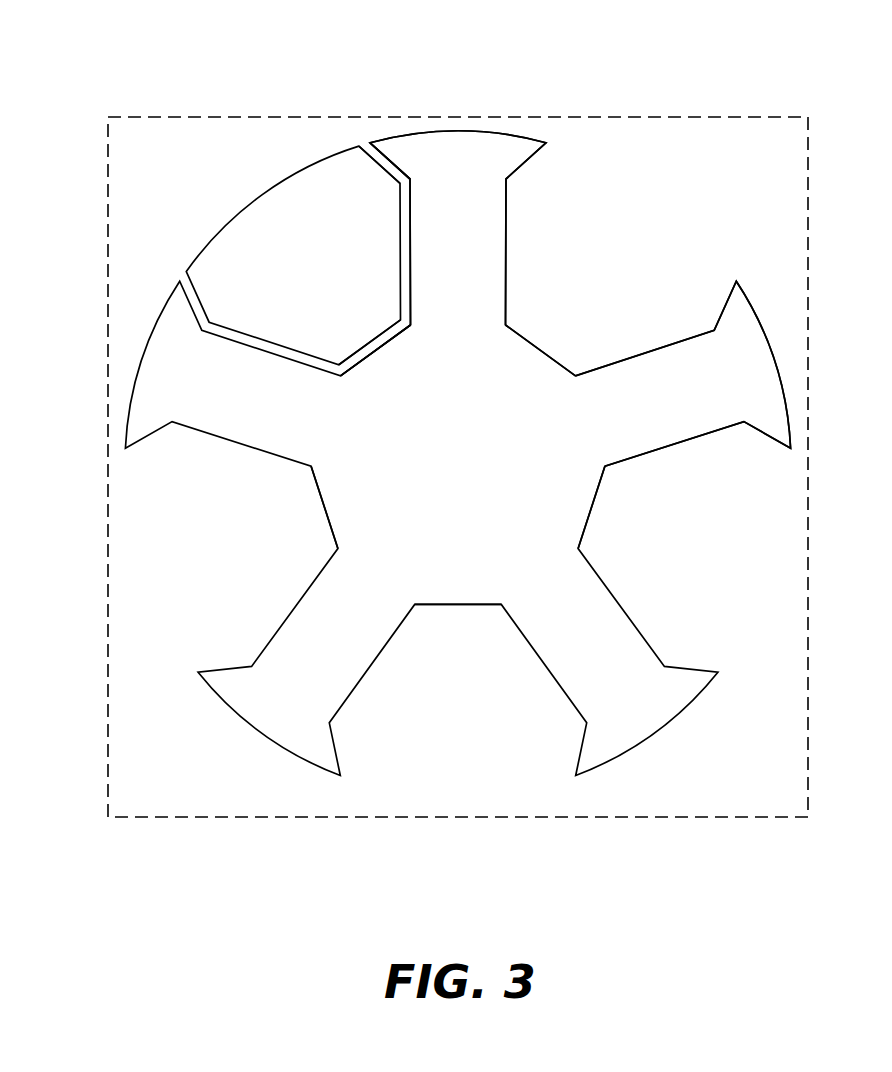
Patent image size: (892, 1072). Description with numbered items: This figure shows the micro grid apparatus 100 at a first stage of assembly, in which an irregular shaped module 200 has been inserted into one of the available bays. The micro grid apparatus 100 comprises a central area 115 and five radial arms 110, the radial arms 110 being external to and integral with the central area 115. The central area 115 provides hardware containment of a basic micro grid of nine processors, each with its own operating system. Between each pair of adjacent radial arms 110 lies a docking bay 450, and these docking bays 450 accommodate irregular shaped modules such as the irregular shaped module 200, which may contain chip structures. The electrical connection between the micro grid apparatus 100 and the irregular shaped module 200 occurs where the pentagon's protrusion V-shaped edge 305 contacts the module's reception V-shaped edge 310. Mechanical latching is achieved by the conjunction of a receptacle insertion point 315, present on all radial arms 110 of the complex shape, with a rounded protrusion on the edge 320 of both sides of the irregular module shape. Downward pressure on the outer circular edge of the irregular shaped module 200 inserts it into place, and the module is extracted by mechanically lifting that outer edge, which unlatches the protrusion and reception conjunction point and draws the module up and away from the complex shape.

The micro grid apparatus 100 is at (146, 331).
The radial arm 110 is at (482, 270).
The central area 115 is at (482, 486).
The irregular shaped module 200 is at (255, 217).
The protrusion 'V' shaped edge 305 is at (377, 352).
The reception 'V' shaped edge 310 is at (367, 347).
The receptacle insertion point 315 is at (393, 164).
The edge with rounded protrusion 320 is at (366, 158).
The docking bay 450 is at (607, 312).